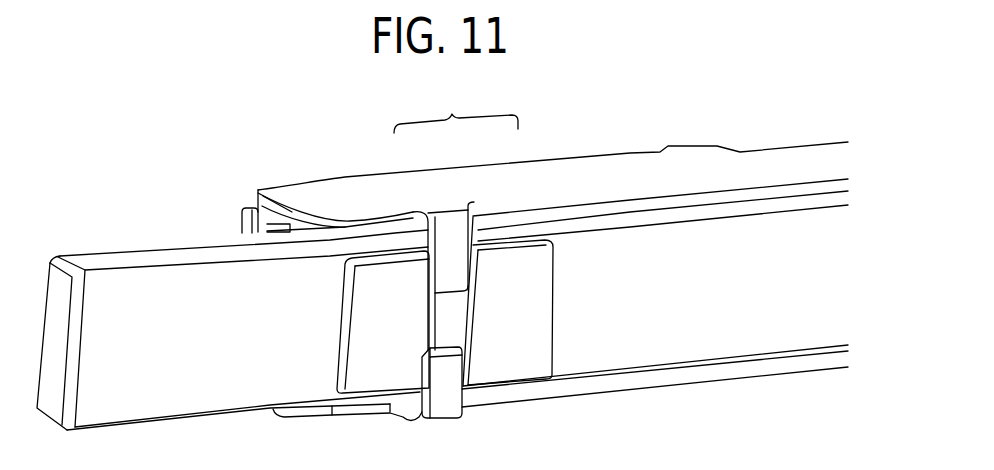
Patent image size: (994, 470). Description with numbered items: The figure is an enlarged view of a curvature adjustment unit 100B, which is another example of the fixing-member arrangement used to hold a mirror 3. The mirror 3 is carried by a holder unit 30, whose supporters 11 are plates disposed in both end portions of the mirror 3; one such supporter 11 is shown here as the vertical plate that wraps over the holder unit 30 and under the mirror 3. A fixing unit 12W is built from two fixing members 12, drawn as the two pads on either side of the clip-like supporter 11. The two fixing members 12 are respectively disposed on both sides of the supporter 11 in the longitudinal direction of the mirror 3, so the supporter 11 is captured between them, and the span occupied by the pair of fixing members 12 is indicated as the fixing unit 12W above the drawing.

The curvature adjustment unit 100B is at (200, 142).
The holder unit 30 is at (657, 153).
The fixing member 12 is at (408, 270).
The fixing unit 12W is at (456, 111).
The supporter 11 is at (458, 275).
The mirror 3 is at (683, 342).